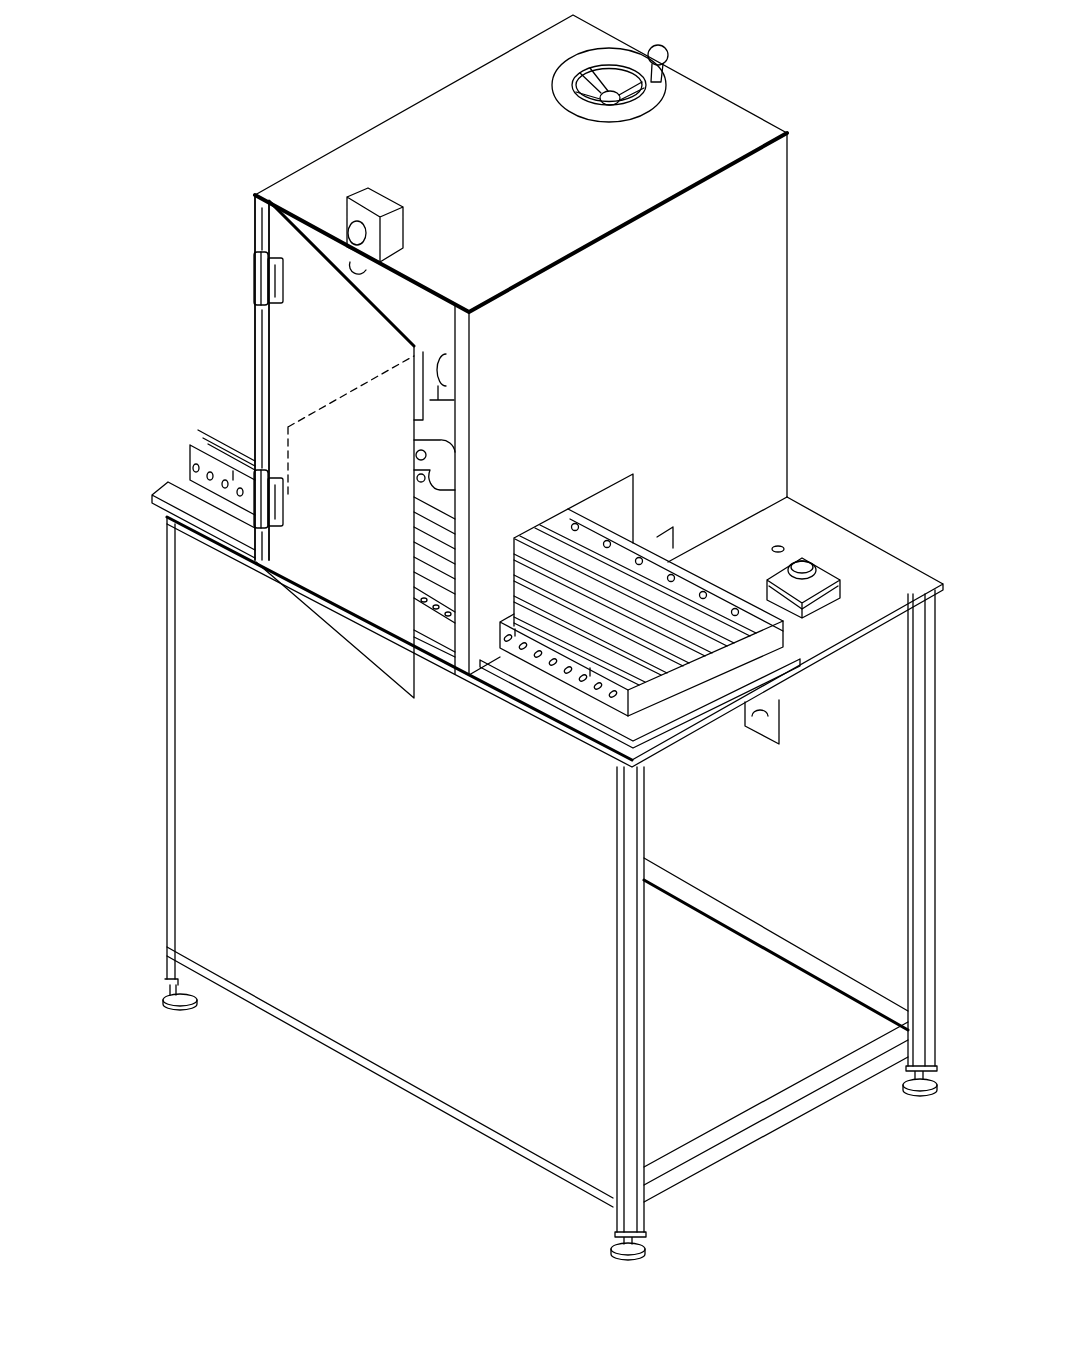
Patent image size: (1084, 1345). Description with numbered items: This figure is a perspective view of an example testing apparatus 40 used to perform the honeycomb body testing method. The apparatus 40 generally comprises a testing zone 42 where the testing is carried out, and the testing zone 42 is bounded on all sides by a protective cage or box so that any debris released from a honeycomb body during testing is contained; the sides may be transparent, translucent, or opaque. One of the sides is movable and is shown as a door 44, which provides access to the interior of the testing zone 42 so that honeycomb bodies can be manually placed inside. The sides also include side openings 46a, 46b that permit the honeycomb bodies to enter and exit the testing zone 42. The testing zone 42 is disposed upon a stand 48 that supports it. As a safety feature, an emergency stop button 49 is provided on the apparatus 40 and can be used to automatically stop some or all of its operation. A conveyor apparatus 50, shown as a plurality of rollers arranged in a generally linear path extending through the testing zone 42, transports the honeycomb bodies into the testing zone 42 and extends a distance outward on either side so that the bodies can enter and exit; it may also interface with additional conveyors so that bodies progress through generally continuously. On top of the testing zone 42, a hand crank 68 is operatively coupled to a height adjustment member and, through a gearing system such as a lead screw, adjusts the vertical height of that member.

The testing apparatus 40 is at (187, 133).
The testing zone 42 is at (440, 127).
The door 44 is at (287, 347).
The side opening 46a is at (610, 505).
The side opening 46b is at (328, 402).
The stand 48 is at (168, 720).
The emergency stop button 49 is at (825, 570).
The conveyor apparatus 50 is at (555, 565).
The hand crank 68 is at (612, 118).